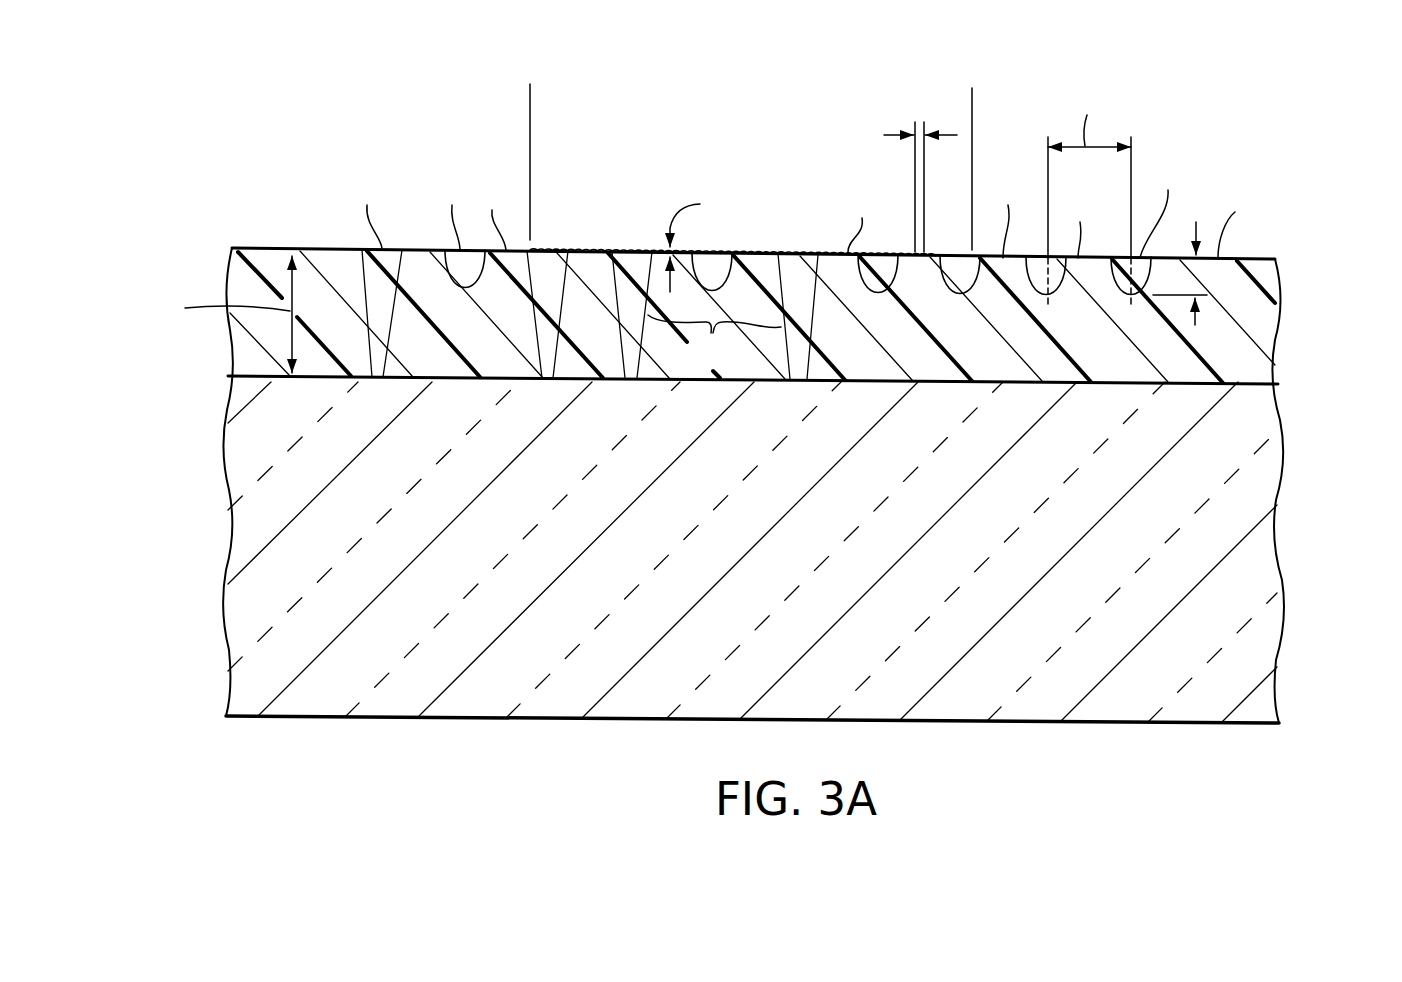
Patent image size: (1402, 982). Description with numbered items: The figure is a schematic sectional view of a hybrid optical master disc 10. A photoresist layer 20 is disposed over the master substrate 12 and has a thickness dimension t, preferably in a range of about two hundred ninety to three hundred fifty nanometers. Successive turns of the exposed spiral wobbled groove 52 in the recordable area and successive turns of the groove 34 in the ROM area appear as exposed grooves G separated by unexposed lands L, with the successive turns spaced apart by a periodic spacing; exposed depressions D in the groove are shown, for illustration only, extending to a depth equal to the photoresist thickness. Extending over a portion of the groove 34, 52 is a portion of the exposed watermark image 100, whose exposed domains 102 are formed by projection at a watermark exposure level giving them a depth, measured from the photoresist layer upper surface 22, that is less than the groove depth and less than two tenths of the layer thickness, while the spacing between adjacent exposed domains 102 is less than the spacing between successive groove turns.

The hybrid optical master disc 10 is at (172, 247).
The master substrate 12 is at (1282, 541).
The photoresist layer 20 is at (1287, 323).
The photoresist layer upper surface 22 is at (1260, 258).
The groove 34 is at (840, 414).
The exposed spiral wobbled groove 52 is at (1170, 416).
The exposed watermark image 100 is at (972, 97).
The exposed domains 102 is at (643, 249).